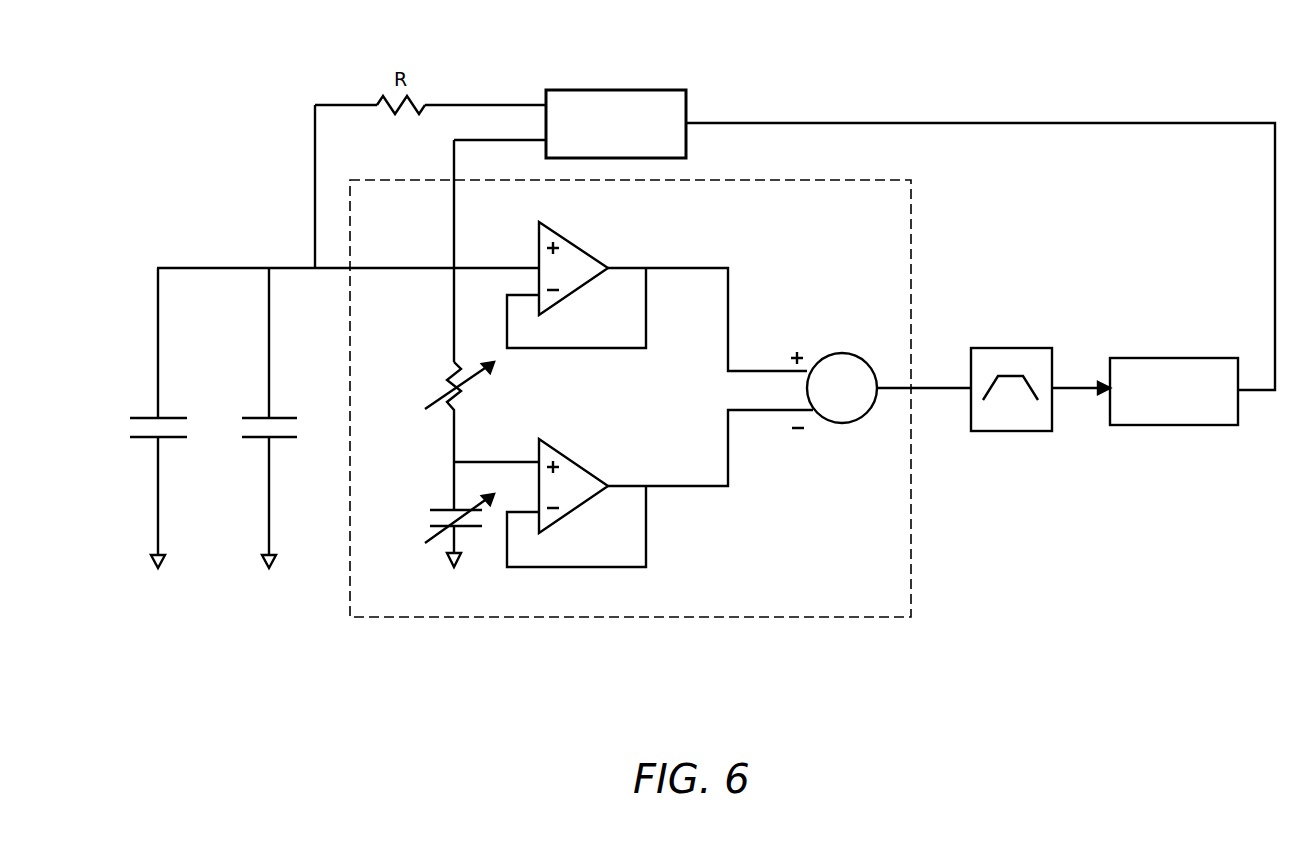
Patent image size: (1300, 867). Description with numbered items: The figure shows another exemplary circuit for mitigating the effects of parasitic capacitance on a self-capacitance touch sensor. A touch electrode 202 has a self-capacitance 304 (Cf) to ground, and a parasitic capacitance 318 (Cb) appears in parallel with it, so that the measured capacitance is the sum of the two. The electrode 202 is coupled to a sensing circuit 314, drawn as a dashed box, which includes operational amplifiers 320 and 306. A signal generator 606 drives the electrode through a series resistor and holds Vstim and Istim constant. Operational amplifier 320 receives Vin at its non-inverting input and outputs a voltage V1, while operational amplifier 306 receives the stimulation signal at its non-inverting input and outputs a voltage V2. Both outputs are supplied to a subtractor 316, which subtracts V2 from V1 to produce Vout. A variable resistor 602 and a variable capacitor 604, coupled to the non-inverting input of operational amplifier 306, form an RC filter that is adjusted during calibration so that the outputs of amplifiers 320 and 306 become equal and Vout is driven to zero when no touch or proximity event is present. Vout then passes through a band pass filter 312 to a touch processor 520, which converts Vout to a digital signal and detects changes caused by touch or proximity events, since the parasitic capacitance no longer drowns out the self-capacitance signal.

The touch electrode 202 is at (290, 268).
The signal generator 606 is at (614, 90).
The parasitic capacitance 318 is at (183, 428).
The self-capacitance 304 is at (299, 428).
The operational amplifier 320 is at (571, 238).
The operational amplifier 306 is at (571, 446).
The resistor 602 is at (445, 388).
The capacitor 604 is at (432, 522).
The subtractor 316 is at (845, 423).
The band pass filter 312 is at (1017, 348).
The touch processor 520 is at (1167, 358).
The sensing circuit 314 is at (388, 618).